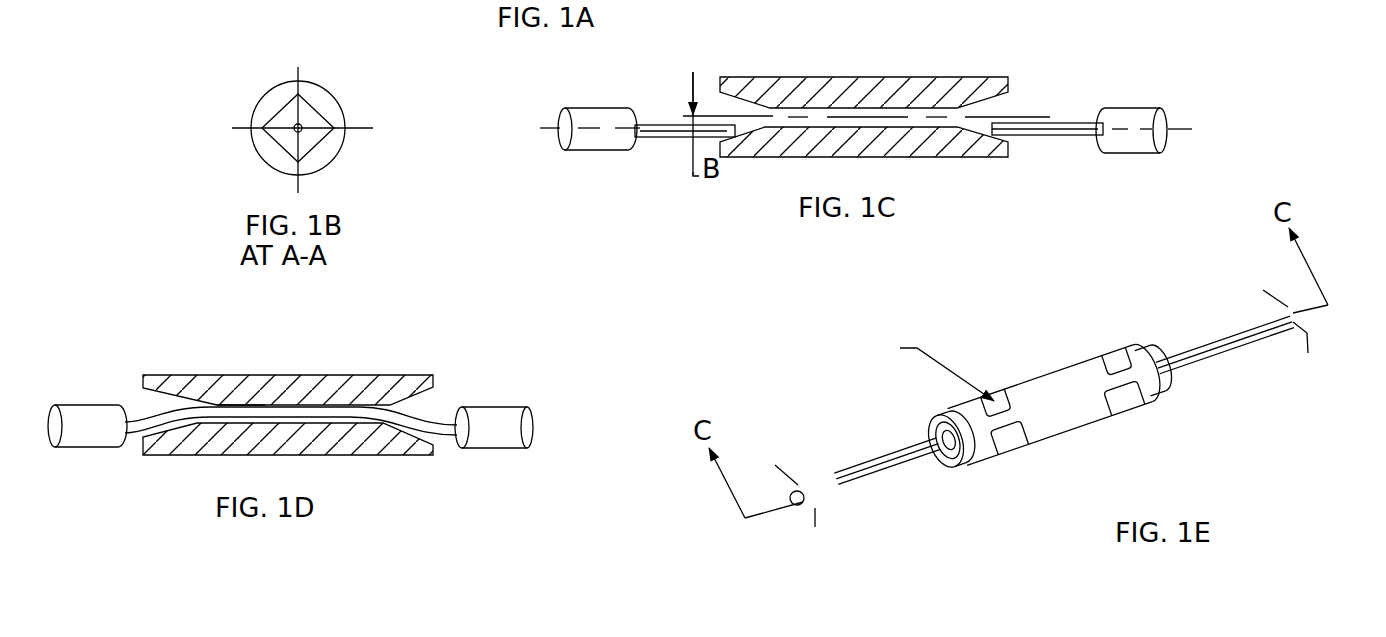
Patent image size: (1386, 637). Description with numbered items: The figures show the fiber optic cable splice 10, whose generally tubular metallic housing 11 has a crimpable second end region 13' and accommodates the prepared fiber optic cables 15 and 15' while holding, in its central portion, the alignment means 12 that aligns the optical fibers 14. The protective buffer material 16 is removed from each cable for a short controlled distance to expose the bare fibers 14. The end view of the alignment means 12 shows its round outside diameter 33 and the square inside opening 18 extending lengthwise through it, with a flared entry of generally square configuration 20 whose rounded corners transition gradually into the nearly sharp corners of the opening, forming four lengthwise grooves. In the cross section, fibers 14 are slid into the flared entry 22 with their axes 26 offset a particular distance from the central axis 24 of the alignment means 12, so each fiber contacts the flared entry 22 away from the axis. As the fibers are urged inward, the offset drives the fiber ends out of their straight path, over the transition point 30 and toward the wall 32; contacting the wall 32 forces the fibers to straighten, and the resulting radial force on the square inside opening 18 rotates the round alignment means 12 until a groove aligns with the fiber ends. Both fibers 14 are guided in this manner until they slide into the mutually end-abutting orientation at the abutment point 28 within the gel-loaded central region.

In FIG. 1E, the fiber optic cable splice 10 is at (1064, 400).
In FIG. 1E, the housing 11 is at (1050, 405).
In FIG. 1C, the alignment means 12 is at (864, 81).
In FIG. 1D, the alignment means 12 is at (298, 426).
In FIG. 1E, the second end region 13' is at (1117, 362).
In FIG. 1C, the optical fibers 14 is at (1047, 167).
In FIG. 1E, the prepared fiber optic cable 15 is at (887, 461).
In FIG. 1E, the prepared fiber optic cable 15' is at (1225, 345).
In FIG. 1C, the protective buffer material 16 is at (1149, 172).
In FIG. 1B, the square inside opening 18 is at (360, 101).
In FIG. 1B, the flared entry of square configuration 20 is at (320, 82).
In FIG. 1B, the flared entry 22 is at (259, 99).
In FIG. 1C, the flared entry 22 is at (946, 72).
In FIG. 1C, the central axis 24 is at (1087, 76).
In FIG. 1C, the fiber axes 26 is at (1231, 101).
In FIG. 1D, the fiber-to-fiber abutment point 28 is at (291, 370).
In FIG. 1D, the transition point 30 is at (298, 475).
In FIG. 1D, the wall 32 is at (228, 355).
In FIG. 1C, the outside diameter 33 is at (768, 57).